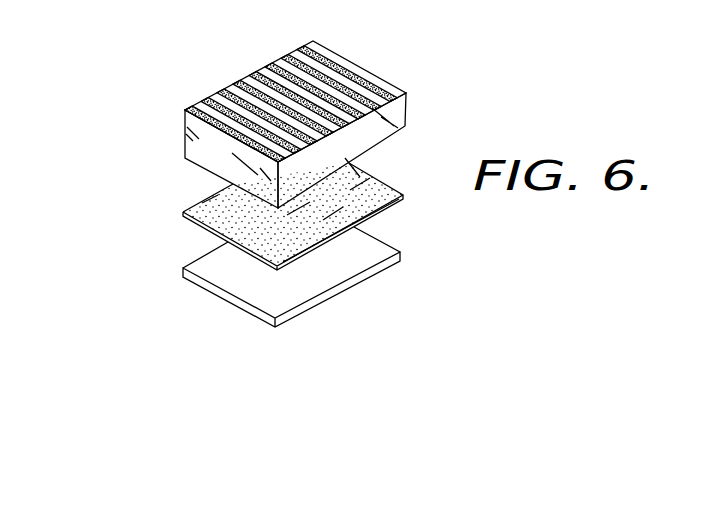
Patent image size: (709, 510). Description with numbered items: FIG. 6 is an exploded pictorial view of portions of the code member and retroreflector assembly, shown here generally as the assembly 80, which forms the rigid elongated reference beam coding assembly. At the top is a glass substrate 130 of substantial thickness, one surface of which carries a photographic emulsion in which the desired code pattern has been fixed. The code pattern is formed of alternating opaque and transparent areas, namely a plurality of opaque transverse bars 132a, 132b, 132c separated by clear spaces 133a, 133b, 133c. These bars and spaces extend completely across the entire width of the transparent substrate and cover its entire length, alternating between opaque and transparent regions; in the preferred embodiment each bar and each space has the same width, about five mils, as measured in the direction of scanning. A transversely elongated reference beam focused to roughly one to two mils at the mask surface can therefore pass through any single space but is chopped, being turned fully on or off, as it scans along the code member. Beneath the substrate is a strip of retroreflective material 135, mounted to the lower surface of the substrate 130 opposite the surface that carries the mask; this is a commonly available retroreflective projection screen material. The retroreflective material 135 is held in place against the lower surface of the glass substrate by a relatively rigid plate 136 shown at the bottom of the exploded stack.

The sensor assembly 80 is at (160, 182).
The glass substrate 130 is at (405, 113).
The opaque transverse bar 132a is at (240, 80).
The opaque transverse bar 132b is at (257, 73).
The opaque transverse bar 132c is at (273, 62).
The clear space 133a is at (302, 157).
The clear space 133b is at (331, 143).
The clear space 133c is at (405, 129).
The strip of retroreflective material 135 is at (378, 211).
The rigid plate 136 is at (353, 284).